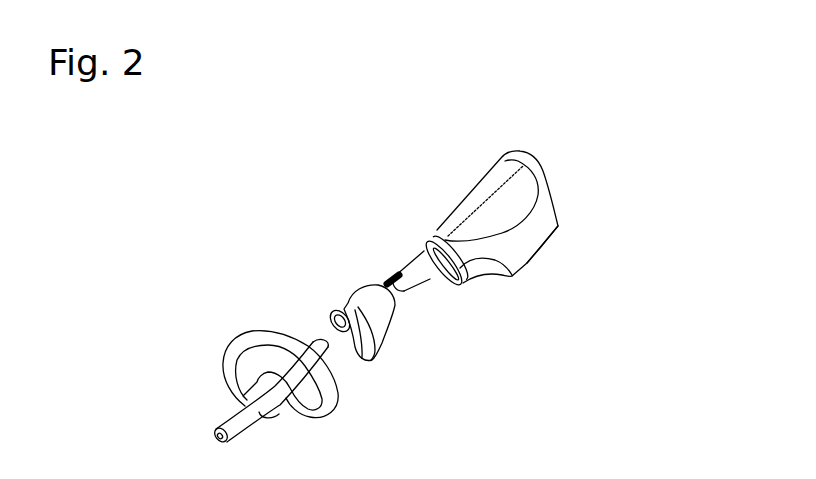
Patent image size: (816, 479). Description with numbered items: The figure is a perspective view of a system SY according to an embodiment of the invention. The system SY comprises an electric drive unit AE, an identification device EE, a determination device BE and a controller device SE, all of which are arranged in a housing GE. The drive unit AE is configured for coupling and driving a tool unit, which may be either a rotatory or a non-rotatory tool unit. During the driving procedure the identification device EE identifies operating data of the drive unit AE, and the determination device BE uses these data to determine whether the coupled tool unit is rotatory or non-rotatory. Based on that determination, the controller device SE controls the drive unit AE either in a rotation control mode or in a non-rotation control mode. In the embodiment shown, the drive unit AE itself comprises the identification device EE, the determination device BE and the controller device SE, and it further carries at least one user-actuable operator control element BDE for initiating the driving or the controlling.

The system SY is at (333, 95).
The controller device SE is at (488, 172).
The determination device BE is at (428, 244).
The operator control element BDE is at (386, 278).
The electric drive unit AE is at (401, 304).
The identification device EE is at (473, 279).
The housing GE is at (527, 263).